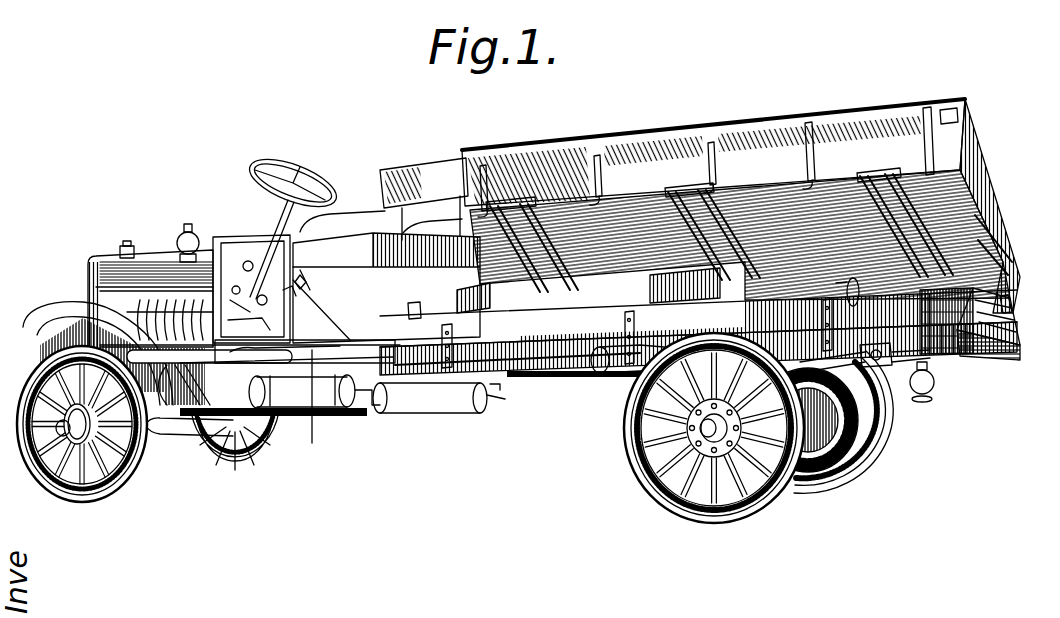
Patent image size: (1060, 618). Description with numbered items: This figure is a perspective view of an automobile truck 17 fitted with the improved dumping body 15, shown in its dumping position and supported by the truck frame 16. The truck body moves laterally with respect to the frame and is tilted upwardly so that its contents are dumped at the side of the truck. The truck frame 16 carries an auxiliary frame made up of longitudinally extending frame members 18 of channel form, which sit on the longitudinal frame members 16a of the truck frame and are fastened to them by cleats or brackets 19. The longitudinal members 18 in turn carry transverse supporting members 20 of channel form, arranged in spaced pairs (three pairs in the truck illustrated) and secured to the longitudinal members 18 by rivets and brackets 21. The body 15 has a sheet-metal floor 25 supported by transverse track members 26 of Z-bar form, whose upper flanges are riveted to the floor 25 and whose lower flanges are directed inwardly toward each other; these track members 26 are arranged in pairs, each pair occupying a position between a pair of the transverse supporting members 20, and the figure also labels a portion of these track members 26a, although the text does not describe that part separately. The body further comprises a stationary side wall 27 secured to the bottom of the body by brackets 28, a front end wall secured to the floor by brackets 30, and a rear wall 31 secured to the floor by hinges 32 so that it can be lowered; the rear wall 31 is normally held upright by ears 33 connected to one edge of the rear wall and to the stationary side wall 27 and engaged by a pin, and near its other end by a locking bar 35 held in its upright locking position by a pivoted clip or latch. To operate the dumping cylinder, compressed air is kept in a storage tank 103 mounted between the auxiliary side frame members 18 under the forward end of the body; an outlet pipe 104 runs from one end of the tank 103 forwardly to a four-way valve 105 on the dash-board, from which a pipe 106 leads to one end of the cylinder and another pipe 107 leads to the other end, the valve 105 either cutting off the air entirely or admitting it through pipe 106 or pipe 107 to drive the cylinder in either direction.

The dumping body 15 is at (772, 112).
The truck frame 16 is at (571, 363).
The longitudinal frame members 16a is at (529, 367).
The automobile truck 17 is at (109, 243).
The longitudinally extending frame members 18 is at (480, 340).
The cleats or brackets 19 is at (626, 320).
The transverse supporting members 20 is at (450, 306).
The brackets 21 is at (489, 305).
The floor 25 is at (777, 197).
The transverse track members 26 is at (521, 212).
The brace hinge plates 26a is at (673, 203).
The stationary side wall 27 is at (645, 150).
The brackets 28 is at (597, 147).
The brackets 30 is at (450, 210).
The rear wall 31 is at (978, 177).
The hinges 32 is at (988, 223).
The ears 33 is at (946, 115).
The locking bar 35 is at (1000, 280).
The storage tank 103 is at (410, 313).
The outlet pipe 104 is at (289, 293).
The four-way valve 105 is at (302, 284).
The pipe 106 is at (238, 237).
The pipe 107 is at (322, 409).